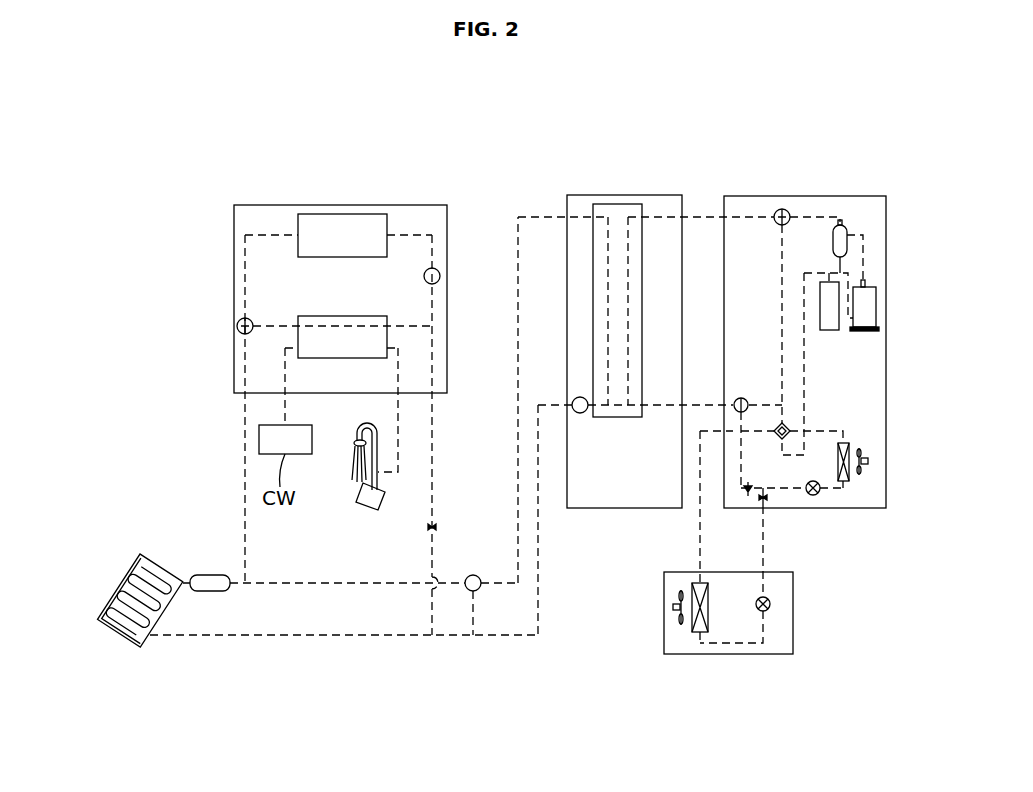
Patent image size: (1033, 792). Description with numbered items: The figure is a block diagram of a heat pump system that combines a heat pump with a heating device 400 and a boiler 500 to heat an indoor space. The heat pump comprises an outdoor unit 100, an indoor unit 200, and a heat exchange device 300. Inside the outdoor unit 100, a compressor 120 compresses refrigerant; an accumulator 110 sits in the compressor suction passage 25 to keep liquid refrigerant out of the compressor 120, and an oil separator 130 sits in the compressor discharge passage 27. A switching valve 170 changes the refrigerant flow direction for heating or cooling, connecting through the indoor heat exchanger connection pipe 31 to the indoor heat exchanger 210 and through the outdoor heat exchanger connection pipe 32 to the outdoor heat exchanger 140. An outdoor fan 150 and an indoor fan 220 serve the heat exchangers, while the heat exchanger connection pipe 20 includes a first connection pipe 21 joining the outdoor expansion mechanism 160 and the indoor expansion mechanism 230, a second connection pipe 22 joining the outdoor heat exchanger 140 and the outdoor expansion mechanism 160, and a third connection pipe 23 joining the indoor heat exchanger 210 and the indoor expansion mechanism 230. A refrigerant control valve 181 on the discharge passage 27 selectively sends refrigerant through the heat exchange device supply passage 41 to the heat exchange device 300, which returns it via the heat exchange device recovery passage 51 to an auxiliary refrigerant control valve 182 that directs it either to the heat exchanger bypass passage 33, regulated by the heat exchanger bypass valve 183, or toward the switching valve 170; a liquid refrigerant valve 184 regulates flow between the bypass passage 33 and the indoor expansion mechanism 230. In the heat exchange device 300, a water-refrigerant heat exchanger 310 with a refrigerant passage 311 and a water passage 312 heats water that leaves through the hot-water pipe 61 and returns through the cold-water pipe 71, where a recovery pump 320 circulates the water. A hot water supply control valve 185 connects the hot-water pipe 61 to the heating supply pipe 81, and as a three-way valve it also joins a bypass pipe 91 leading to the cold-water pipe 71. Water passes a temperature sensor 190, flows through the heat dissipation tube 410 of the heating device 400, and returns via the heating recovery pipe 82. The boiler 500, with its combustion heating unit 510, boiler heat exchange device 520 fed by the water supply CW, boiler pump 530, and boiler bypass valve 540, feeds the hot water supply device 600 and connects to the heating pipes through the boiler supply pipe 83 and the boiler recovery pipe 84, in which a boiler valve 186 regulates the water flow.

The heat exchanger connection pipe 20 is at (843, 629).
The first connection pipe 21 is at (785, 492).
The second connection pipe 22 is at (840, 492).
The third connection pipe 23 is at (765, 632).
The compressor suction passage 25 is at (863, 273).
The compressor discharge passage 27 is at (818, 217).
The indoor heat exchanger connection pipe 31 is at (700, 540).
The outdoor heat exchanger connection pipe 32 is at (823, 431).
The heat exchanger bypass passage 33 is at (738, 458).
The heat exchange device supply passage 41 is at (700, 217).
The heat exchange device recovery passage 51 is at (696, 405).
The hot-water pipe 61 is at (535, 217).
The cold-water pipe 71 is at (538, 570).
The heating supply pipe 81 is at (184, 590).
The heating recovery pipe 82 is at (178, 637).
The boiler supply pipe 83 is at (245, 458).
The boiler recovery pipe 84 is at (432, 425).
The bypass pipe 91 is at (478, 612).
The outdoor unit 100 is at (818, 190).
The accumulator 110 is at (829, 330).
The compressor 120 is at (876, 311).
The oil separator 130 is at (847, 232).
The outdoor heat exchanger 140 is at (849, 443).
The outdoor fan 150 is at (866, 463).
The outdoor expansion mechanism 160 is at (808, 484).
The switching valve 170 is at (790, 431).
The refrigerant control valve 181 is at (782, 209).
The auxiliary refrigerant control valve 182 is at (741, 398).
The heat exchanger bypass valve 183 is at (748, 496).
The liquid refrigerant valve 184 is at (764, 504).
The hot water supply control valve 185 is at (473, 575).
The boiler valve 186 is at (434, 524).
The temperature sensor 190 is at (210, 575).
The indoor unit 200 is at (733, 655).
The indoor heat exchanger 210 is at (697, 632).
The indoor fan 220 is at (676, 615).
The indoor expansion mechanism 230 is at (763, 597).
The heat exchange device 300 is at (640, 190).
The water-refrigerant heat exchanger 310 is at (602, 204).
The refrigerant passage 311 is at (628, 315).
The water passage 312 is at (608, 410).
The recovery pump 320 is at (583, 413).
The heating device 400 is at (108, 585).
The heat dissipation tube 410 is at (125, 625).
The boiler 500 is at (378, 205).
The combustion heating unit 510 is at (315, 214).
The boiler heat exchange device 520 is at (375, 316).
The boiler pump 530 is at (440, 276).
The boiler bypass valve 540 is at (237, 326).
The hot water supply device 600 is at (373, 512).